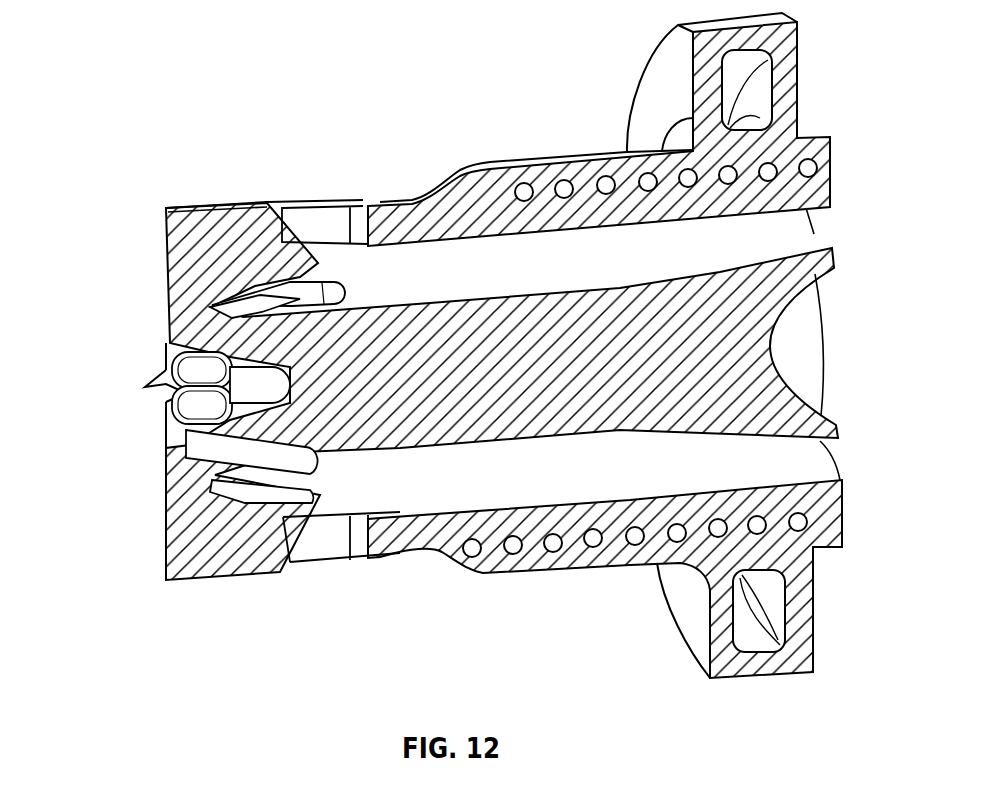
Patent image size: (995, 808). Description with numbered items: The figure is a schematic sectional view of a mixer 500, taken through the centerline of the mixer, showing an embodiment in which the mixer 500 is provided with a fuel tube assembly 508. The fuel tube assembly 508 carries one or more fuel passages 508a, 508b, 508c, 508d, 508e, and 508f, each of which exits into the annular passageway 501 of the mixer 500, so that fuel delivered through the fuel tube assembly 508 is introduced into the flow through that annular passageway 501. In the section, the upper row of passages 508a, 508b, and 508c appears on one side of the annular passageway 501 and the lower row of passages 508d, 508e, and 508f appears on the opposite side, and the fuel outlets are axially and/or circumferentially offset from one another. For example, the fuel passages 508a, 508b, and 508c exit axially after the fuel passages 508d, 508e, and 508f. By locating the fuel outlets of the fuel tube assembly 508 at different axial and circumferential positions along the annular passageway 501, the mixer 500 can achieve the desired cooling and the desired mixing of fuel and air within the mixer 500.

The mixer 500 is at (500, 347).
The annular passageway 501 is at (785, 241).
The fuel tube assembly 508 is at (504, 347).
The fuel passage 508a is at (524, 183).
The fuel passage 508b is at (564, 180).
The fuel passage 508c is at (606, 176).
The fuel passage 508d is at (472, 557).
The fuel passage 508e is at (513, 554).
The fuel passage 508f is at (553, 552).